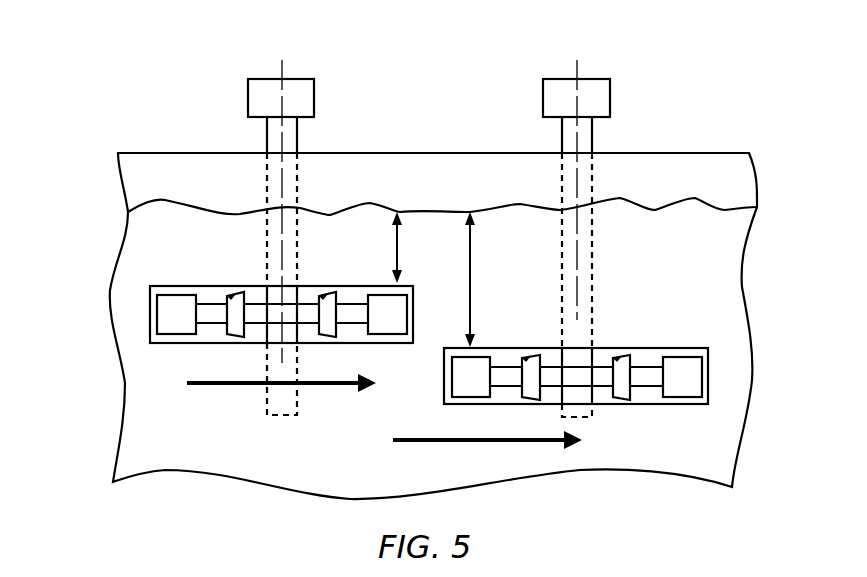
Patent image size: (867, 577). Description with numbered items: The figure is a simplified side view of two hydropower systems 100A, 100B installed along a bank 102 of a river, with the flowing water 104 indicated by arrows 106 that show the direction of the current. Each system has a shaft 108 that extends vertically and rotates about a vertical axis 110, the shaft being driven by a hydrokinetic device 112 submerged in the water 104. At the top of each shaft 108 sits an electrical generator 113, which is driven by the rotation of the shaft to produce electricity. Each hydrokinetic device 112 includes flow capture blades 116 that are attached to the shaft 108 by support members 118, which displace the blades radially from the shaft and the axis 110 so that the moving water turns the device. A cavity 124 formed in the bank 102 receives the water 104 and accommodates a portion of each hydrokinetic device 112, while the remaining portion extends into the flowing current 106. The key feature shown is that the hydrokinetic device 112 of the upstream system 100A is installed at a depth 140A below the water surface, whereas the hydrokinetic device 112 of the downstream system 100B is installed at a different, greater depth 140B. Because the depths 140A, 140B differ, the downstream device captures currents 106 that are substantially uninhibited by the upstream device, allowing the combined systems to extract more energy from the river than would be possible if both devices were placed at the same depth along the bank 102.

The hydropower system 100A is at (210, 52).
The hydropower system 100B is at (664, 52).
The bank 102 is at (118, 150).
The water 104 is at (130, 246).
The arrows 106 is at (235, 387).
The shaft 108 is at (272, 135).
The vertical axis 110 is at (282, 68).
The hydrokinetic device 112 is at (130, 297).
The electrical generator 113 is at (308, 98).
The flow capture blades 116 is at (237, 303).
The support members 118 is at (213, 317).
The cavity 124 is at (208, 292).
The depth 140A is at (397, 252).
The depth 140B is at (470, 277).